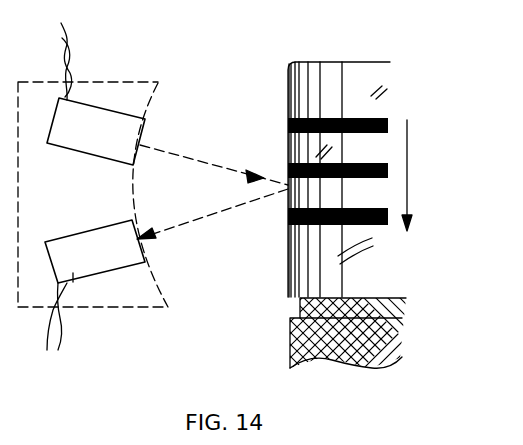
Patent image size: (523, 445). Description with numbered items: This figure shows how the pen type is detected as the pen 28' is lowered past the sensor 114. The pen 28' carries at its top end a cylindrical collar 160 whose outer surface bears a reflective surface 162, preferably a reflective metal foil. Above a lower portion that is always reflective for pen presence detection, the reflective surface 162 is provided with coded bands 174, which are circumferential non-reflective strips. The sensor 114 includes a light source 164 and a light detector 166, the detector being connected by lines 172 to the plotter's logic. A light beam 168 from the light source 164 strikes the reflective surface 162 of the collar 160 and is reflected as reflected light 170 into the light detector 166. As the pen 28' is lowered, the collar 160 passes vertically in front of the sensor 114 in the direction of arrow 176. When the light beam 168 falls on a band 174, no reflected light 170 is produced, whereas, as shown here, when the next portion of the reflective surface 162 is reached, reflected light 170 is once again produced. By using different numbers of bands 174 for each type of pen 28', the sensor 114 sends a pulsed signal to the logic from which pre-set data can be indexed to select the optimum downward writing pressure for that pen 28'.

The sensor 114 is at (145, 82).
The cylindrical collar portion 160 is at (383, 78).
The reflective surface 162 is at (297, 107).
The light source 164 is at (92, 113).
The light detector 166 is at (108, 275).
The light beam 168 is at (172, 153).
The reflected light 170 is at (190, 224).
The lines 172 is at (62, 332).
The coded bands 174 is at (290, 175).
The arrow 176 is at (409, 172).
The pen 28' is at (328, 333).